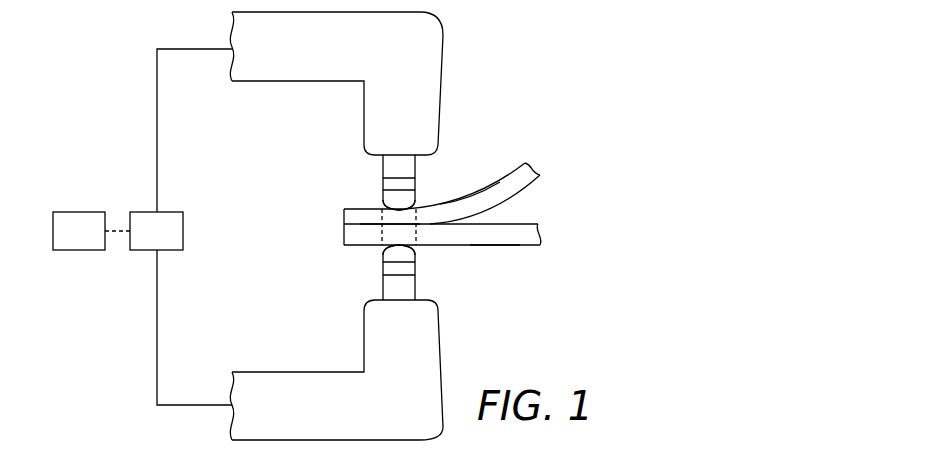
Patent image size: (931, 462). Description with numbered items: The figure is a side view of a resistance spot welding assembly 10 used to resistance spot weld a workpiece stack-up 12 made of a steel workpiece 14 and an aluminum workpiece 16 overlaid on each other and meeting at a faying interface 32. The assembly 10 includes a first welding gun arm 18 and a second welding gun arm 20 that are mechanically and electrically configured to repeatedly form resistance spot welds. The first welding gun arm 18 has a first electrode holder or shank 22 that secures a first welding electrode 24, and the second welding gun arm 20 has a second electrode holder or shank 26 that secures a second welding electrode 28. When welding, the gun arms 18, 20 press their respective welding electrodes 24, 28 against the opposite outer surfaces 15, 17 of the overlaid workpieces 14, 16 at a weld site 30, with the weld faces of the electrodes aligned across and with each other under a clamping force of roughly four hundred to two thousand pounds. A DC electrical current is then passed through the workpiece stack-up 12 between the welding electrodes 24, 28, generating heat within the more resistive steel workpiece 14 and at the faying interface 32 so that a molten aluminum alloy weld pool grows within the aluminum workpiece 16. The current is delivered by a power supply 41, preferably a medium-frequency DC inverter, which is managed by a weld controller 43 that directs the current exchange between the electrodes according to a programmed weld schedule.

The resistance spot welding assembly 10 is at (542, 90).
The workpiece stack-up 12 is at (343, 224).
The steel workpiece 14 is at (531, 247).
The outer surface of the steel workpiece 15 is at (500, 246).
The aluminum workpiece 16 is at (508, 186).
The outer surface of the aluminum workpiece 17 is at (478, 196).
The first welding gun arm 18 is at (443, 48).
The second welding gun arm 20 is at (440, 352).
The first electrode holder or shank 22 is at (397, 165).
The first welding electrode 24 is at (395, 201).
The second electrode holder or shank 26 is at (393, 285).
The second welding electrode 28 is at (397, 255).
The weld site 30 is at (418, 234).
The faying interface 32 is at (392, 225).
The power supply 41 is at (146, 246).
The weld controller 43 is at (68, 246).